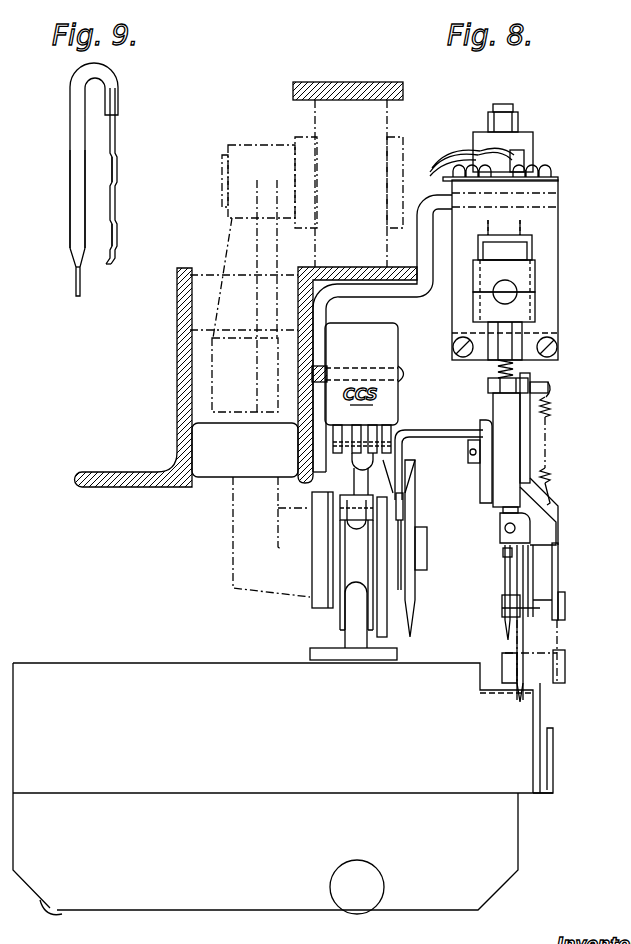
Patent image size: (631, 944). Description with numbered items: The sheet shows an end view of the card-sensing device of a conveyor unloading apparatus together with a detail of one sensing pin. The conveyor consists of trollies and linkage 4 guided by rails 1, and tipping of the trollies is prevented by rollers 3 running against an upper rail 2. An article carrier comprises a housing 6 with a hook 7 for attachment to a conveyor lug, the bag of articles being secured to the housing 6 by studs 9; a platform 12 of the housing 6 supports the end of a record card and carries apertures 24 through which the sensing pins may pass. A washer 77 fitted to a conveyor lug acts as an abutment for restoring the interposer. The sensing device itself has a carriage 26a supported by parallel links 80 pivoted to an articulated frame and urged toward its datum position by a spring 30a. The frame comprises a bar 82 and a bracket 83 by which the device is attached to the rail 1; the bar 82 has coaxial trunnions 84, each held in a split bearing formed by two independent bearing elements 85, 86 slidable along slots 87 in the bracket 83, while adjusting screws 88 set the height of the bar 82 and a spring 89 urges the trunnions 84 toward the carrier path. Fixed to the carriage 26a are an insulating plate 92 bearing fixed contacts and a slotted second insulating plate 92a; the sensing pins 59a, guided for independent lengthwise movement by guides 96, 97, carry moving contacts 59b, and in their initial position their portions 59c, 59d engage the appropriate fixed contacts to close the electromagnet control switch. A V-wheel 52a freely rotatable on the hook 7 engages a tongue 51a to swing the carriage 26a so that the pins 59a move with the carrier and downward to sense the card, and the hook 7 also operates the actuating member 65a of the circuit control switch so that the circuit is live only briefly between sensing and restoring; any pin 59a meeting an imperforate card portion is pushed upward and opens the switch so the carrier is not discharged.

In FIG. 8, the rails 1 is at (352, 266).
In FIG. 8, the upper rail 2 is at (350, 82).
In FIG. 8, the rollers 3 is at (327, 118).
In FIG. 8, the trollies and linkage 4 is at (232, 242).
In FIG. 8, the housing 6 is at (148, 670).
In FIG. 8, the hook 7 is at (343, 628).
In FIG. 8, the studs 9 is at (362, 906).
In FIG. 8, the platform 12 is at (505, 693).
In FIG. 8, the apertures 24 is at (535, 700).
In FIG. 8, the carriage 26a is at (545, 609).
In FIG. 8, the spring 30a is at (553, 407).
In FIG. 8, the tongue 51a is at (405, 438).
In FIG. 8, the V-wheel 52a is at (411, 510).
In FIG. 9, the sensing pins 59a is at (73, 216).
In FIG. 8, the sensing pins 59a is at (510, 578).
In FIG. 9, the moving contacts 59b is at (116, 138).
In FIG. 8, the moving contacts 59b is at (531, 531).
In FIG. 9, the contact portion 59c is at (117, 240).
In FIG. 9, the contact portion 59d is at (117, 178).
In FIG. 8, the actuating member 65a is at (363, 475).
In FIG. 8, the washer 77 is at (315, 602).
In FIG. 8, the parallel links 80 is at (557, 518).
In FIG. 8, the bar 82 is at (502, 405).
In FIG. 8, the bracket 83 is at (432, 312).
In FIG. 8, the trunnions 84 is at (512, 290).
In FIG. 8, the bearing element 85 is at (527, 311).
In FIG. 8, the bearing element 86 is at (523, 268).
In FIG. 8, the slots 87 is at (528, 237).
In FIG. 8, the adjusting screws 88 is at (490, 386).
In FIG. 8, the spring 89 is at (515, 250).
In FIG. 8, the insulating plate 92 is at (535, 546).
In FIG. 8, the second insulating plate 92a is at (531, 582).
In FIG. 8, the guide 96 is at (503, 552).
In FIG. 8, the guide 97 is at (504, 606).